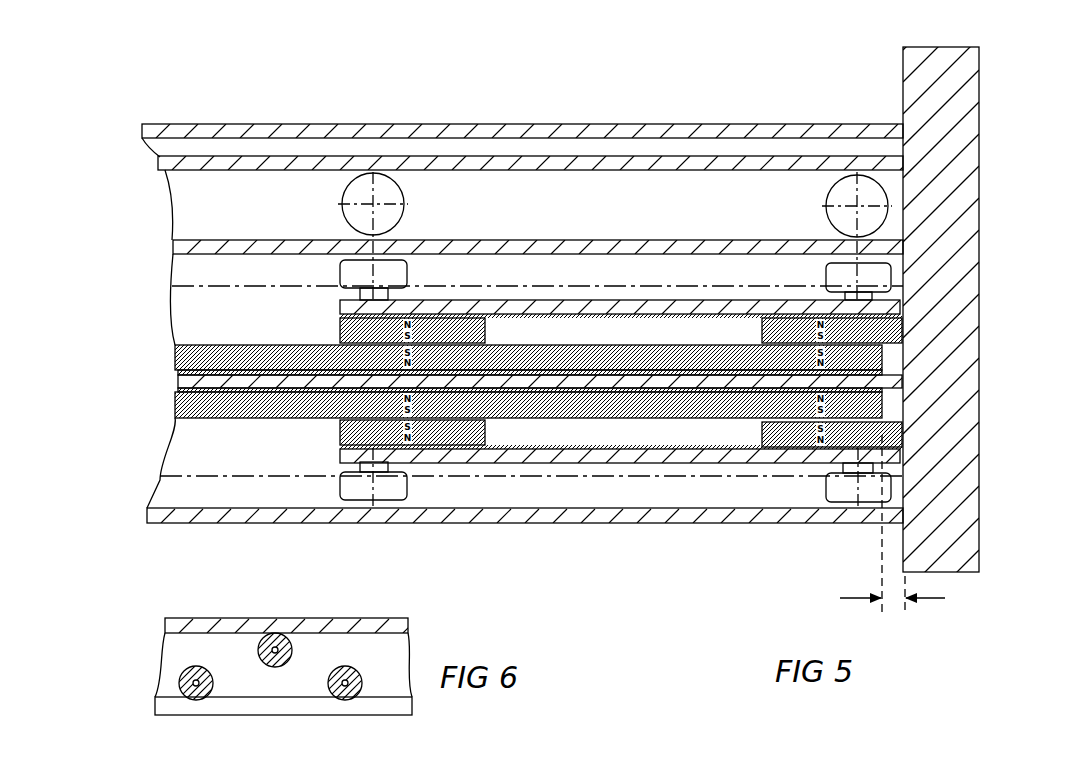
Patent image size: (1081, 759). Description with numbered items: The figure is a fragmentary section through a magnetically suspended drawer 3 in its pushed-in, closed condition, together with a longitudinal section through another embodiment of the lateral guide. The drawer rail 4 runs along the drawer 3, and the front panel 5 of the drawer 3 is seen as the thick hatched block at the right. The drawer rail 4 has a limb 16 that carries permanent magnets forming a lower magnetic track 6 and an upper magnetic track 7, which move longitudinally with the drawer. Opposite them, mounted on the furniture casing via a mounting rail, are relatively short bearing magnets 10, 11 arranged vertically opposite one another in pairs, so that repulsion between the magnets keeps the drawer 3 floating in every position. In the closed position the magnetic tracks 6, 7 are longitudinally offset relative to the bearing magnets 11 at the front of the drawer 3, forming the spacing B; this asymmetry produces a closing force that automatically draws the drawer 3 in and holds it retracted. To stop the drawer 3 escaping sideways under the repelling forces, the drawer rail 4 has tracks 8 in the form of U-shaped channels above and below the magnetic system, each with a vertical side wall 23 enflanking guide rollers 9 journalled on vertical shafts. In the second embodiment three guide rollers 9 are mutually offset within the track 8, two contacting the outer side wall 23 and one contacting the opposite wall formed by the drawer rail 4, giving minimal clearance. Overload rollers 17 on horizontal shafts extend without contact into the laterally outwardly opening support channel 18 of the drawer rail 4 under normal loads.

In FIG. 5, the drawer 3 is at (982, 370).
In FIG. 5, the drawer rail 4 is at (168, 242).
In FIG. 5, the front panel 5 is at (955, 287).
In FIG. 5, the lower magnetic track 6 is at (176, 402).
In FIG. 5, the upper magnetic track 7 is at (176, 358).
In FIG. 5, the track 8 is at (522, 270).
In FIG. 6, the track 8 is at (380, 625).
In FIG. 5, the guide roller 9 is at (393, 276).
In FIG. 6, the guide roller 9 is at (281, 635).
In FIG. 5, the bearing magnet 10 is at (340, 325).
In FIG. 5, the bearing magnet 11 is at (895, 330).
In FIG. 5, the limb 16 is at (178, 380).
In FIG. 5, the overload roller 17 is at (385, 196).
In FIG. 5, the support channel 18 is at (640, 192).
In FIG. 6, the vertical side wall 23 is at (313, 705).
In FIG. 5, the spacing B is at (893, 604).